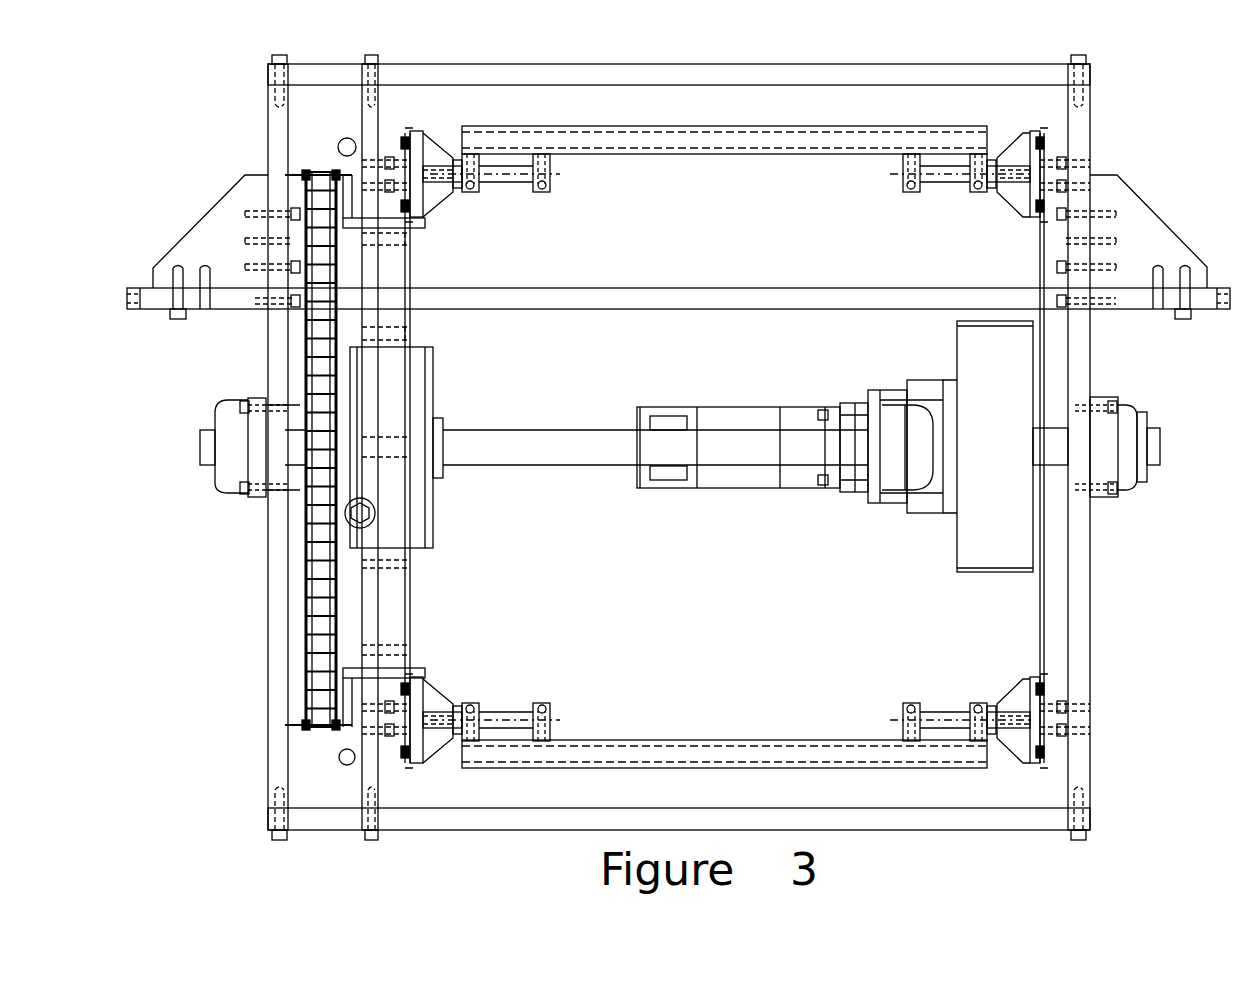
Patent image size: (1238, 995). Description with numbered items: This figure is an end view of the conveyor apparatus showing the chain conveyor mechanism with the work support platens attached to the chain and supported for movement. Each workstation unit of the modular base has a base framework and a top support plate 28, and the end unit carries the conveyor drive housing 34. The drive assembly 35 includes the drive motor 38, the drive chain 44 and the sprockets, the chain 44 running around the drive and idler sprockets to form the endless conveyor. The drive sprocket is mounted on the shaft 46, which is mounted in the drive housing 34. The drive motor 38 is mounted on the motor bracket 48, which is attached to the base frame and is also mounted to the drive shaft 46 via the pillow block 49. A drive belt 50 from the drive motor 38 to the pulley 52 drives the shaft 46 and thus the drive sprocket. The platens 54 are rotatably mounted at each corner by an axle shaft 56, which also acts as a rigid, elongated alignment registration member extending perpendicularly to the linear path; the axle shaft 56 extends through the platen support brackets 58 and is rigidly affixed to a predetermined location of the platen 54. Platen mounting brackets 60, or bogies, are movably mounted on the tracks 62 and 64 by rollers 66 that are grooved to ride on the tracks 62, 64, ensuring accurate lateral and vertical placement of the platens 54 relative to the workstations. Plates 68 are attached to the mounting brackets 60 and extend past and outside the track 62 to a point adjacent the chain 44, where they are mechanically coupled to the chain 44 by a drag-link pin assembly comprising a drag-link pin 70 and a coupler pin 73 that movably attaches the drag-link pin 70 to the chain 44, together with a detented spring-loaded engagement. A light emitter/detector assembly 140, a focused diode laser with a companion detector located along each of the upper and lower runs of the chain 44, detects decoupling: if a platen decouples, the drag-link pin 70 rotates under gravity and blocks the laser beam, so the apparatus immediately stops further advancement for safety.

The top support plate 28 is at (738, 288).
The conveyor drive housing 34 is at (612, 83).
The drive assembly 35 is at (626, 547).
The drive motor 38 is at (738, 408).
The drive chain 44 is at (310, 632).
The shaft 46 is at (533, 430).
The motor bracket 48 is at (882, 390).
The pillow block 49 is at (917, 472).
The drive belt 50 is at (985, 573).
The pulley 52 is at (975, 530).
The platens 54 is at (740, 126).
The axle shaft 56 is at (515, 176).
The platen support brackets 58 is at (470, 166).
The platen mounting brackets 60 is at (440, 210).
The track 62 is at (410, 322).
The track 64 is at (1042, 240).
The rollers 66 is at (410, 140).
The plates 68 is at (393, 668).
The drag-link pin 70 is at (347, 697).
The coupler pin 73 is at (345, 725).
The light emitter/detector assembly 140 is at (340, 145).